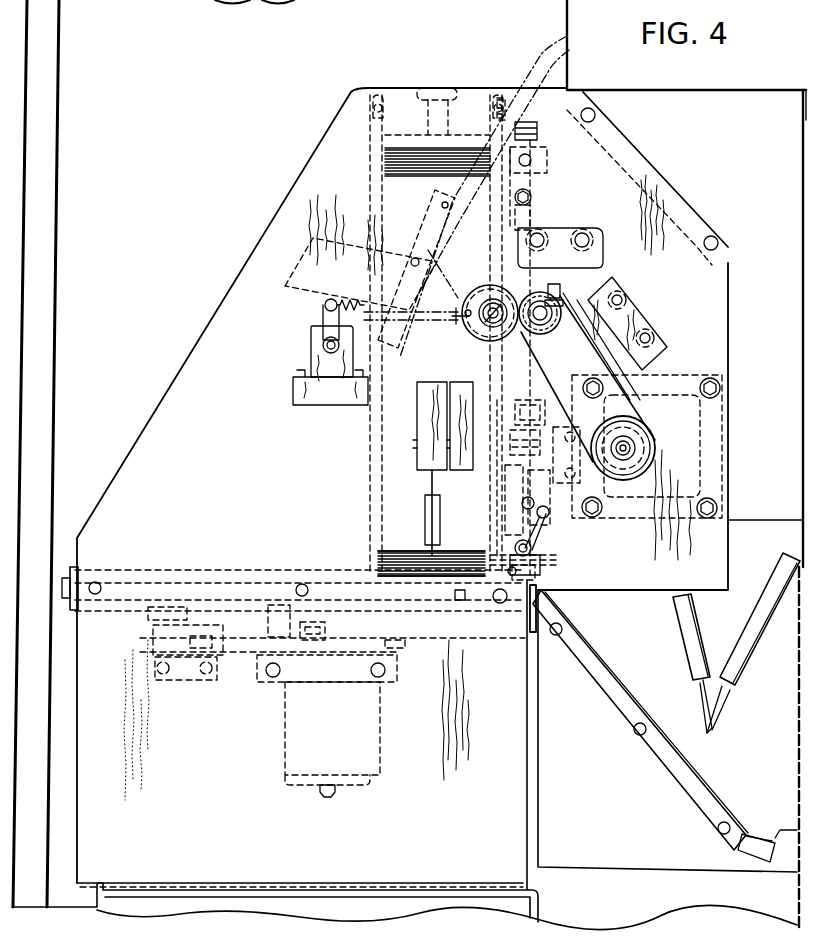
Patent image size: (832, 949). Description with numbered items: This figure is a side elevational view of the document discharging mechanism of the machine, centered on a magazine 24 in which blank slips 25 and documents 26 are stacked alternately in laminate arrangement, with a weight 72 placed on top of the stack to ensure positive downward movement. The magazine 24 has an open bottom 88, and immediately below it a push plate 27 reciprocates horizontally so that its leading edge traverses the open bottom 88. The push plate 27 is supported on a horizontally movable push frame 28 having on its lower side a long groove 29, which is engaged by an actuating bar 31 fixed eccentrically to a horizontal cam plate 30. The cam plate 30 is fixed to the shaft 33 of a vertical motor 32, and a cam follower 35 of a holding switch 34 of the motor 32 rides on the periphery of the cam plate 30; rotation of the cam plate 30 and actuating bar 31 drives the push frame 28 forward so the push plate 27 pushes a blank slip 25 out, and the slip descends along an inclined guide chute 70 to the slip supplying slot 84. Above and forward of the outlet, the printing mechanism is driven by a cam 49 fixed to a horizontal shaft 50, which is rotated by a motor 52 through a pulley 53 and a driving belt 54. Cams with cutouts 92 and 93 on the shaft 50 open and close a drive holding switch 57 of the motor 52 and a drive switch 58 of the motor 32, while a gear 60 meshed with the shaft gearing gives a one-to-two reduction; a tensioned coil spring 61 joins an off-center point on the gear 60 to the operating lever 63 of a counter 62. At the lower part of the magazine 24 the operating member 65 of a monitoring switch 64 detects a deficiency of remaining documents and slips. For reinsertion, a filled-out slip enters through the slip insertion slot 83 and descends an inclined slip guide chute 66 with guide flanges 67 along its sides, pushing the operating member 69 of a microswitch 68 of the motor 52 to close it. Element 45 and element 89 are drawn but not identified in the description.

The magazine 24 is at (371, 428).
The blank slips 25 is at (372, 550).
The documents 26 is at (390, 543).
The push plate 27 is at (208, 570).
The push frame 28 is at (160, 617).
The long groove 29 is at (268, 615).
The cam plate 30 is at (396, 642).
The actuating bar 31 is at (262, 652).
The vertical motor 32 is at (384, 732).
The shaft 33 is at (322, 628).
The holding switch 34 is at (160, 645).
The cam follower 35 is at (197, 640).
The lever arm 45 is at (505, 548).
The cam 49 is at (494, 290).
The horizontal shaft 50 is at (553, 330).
The motor 52 is at (712, 452).
The pulley 53 is at (638, 442).
The driving belt 54 is at (617, 392).
The drive holding switch 57 is at (645, 302).
The drive switch 58 is at (596, 230).
The gear 60 is at (484, 343).
The tensioned coil spring 61 is at (446, 320).
The counter 62 is at (311, 350).
The operating lever 63 is at (324, 306).
The monitoring switch 64 is at (422, 412).
The operating member 65 is at (428, 486).
The slip guide chute 66 is at (420, 212).
The guide flanges 67 is at (522, 100).
The microswitch 68 is at (383, 232).
The operating member 69 is at (440, 285).
The inclined guide chute 70 is at (628, 702).
The weight 72 is at (430, 128).
The slip insertion slot 83 is at (569, 60).
The slip supplying slot 84 is at (797, 722).
The open bottom 88 is at (460, 592).
The roller 89 is at (500, 604).
The cutout 92 is at (556, 292).
The cutout 93 is at (548, 350).